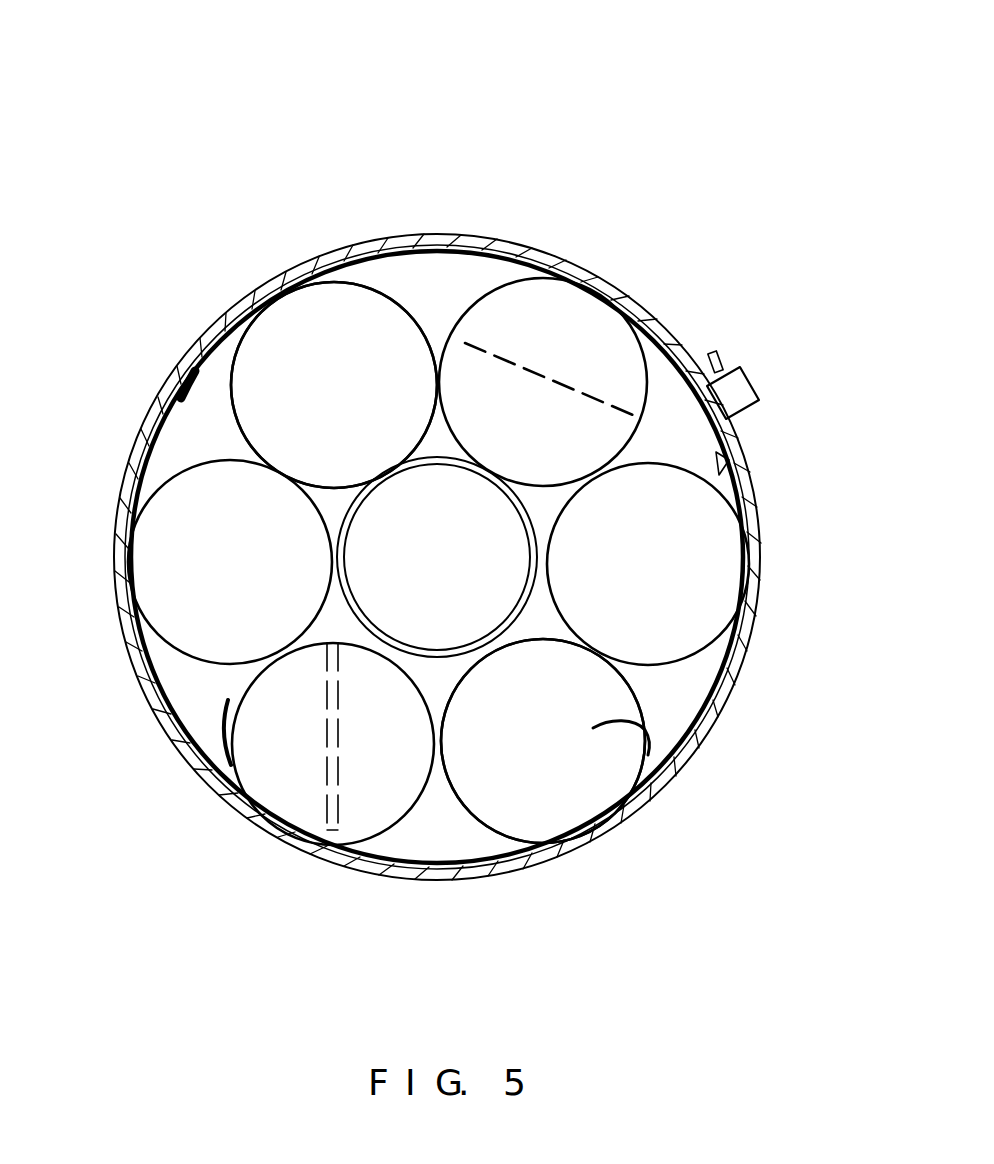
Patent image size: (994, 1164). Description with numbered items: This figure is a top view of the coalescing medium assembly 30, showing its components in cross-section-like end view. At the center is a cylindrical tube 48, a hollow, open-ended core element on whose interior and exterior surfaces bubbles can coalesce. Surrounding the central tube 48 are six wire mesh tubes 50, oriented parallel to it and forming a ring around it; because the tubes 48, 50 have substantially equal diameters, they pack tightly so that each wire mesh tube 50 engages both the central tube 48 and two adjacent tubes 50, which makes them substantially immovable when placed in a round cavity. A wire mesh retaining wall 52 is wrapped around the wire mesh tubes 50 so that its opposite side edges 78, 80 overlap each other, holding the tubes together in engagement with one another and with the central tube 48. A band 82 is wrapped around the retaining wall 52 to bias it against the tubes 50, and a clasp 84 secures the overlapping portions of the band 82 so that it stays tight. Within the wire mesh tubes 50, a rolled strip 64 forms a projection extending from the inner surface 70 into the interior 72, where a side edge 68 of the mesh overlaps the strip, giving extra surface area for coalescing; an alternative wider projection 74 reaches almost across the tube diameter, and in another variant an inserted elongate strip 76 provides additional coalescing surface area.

The coalescing medium assembly 30 is at (721, 92).
The wire mesh retaining wall 52 is at (477, 237).
The clasp 84 is at (748, 392).
The side edge 80 is at (129, 458).
The side edge 78 is at (198, 378).
The strip 64 is at (330, 298).
The interior 72 is at (288, 604).
The inner surface 70 is at (410, 452).
The projection 74 is at (553, 387).
The side edge 68 is at (652, 392).
The cylindrical tube 48 is at (432, 648).
The strip 76 is at (340, 717).
The wire mesh tubes 50 is at (647, 704).
The band 82 is at (472, 879).